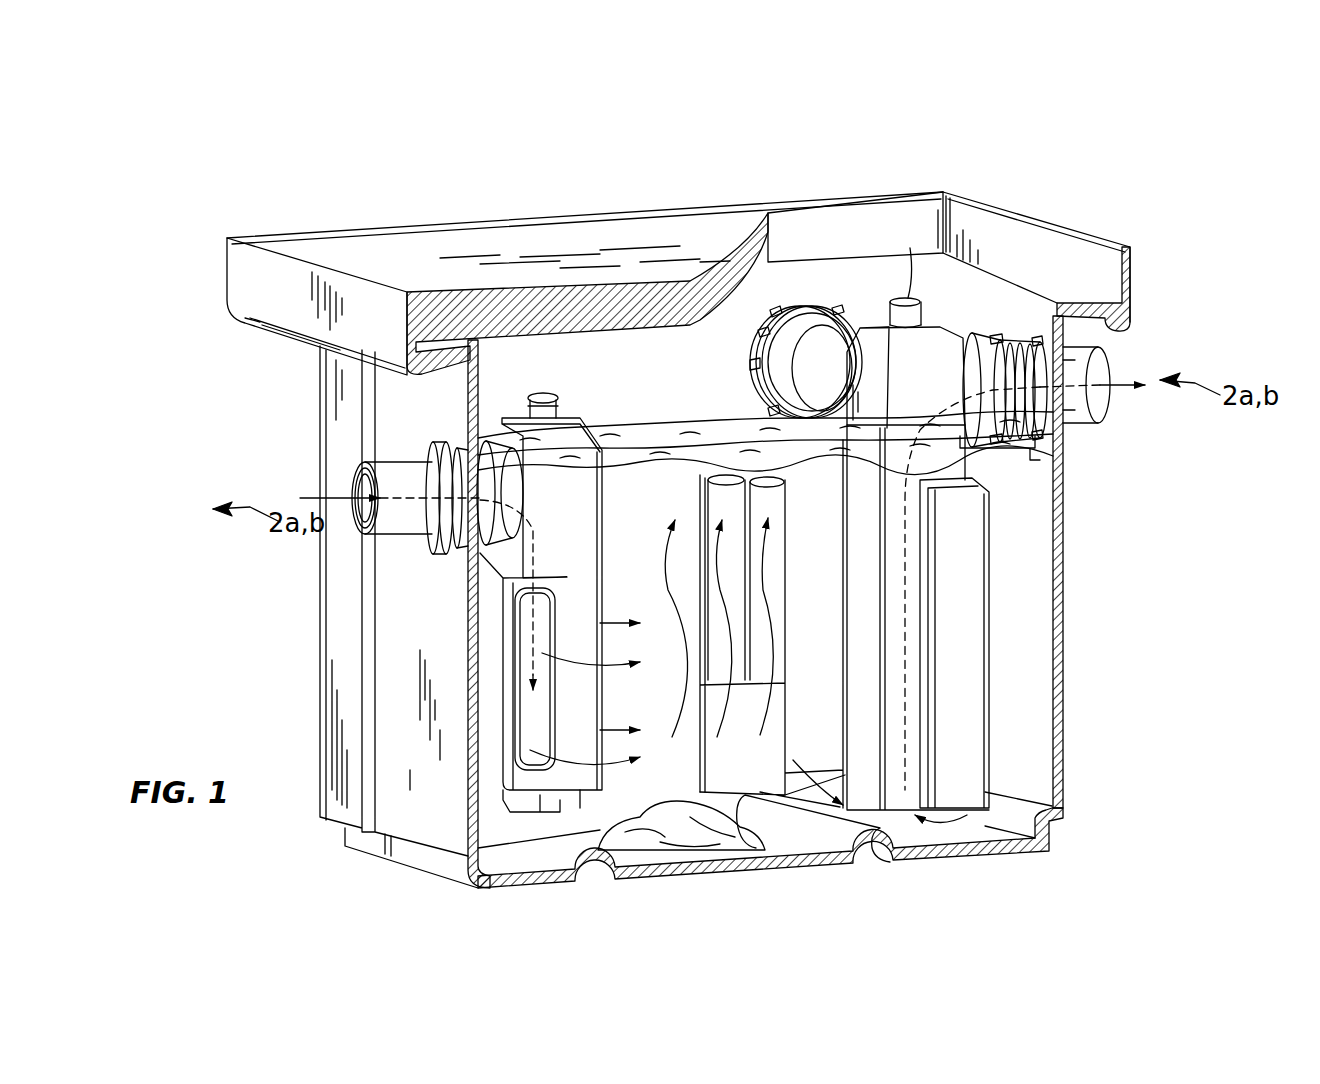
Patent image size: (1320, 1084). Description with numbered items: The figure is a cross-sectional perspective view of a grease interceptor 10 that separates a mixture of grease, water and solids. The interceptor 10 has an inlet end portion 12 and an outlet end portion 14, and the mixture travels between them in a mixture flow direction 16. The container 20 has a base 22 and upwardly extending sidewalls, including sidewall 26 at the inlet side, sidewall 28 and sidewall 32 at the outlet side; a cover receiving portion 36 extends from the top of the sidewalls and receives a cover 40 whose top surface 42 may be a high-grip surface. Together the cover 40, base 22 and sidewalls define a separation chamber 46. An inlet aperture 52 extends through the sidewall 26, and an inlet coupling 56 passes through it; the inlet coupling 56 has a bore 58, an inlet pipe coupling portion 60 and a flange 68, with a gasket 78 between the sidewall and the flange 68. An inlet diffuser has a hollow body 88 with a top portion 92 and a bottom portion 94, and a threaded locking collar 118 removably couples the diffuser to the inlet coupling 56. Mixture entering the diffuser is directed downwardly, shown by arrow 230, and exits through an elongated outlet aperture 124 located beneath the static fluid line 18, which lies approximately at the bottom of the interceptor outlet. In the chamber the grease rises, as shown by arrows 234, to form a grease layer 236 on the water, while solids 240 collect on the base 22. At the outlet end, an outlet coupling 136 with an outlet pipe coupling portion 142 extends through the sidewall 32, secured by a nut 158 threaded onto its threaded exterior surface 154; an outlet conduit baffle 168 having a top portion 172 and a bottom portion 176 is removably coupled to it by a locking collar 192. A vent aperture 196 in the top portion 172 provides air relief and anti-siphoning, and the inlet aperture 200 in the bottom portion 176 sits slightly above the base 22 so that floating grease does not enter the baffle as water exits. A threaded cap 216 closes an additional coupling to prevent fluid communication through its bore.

The interceptor 10 is at (1042, 110).
The inlet end portion 12 is at (360, 165).
The outlet end portion 14 is at (876, 140).
The mixture flow direction 16 is at (668, 196).
The static fluid line 18 is at (1020, 447).
The container 20 is at (318, 672).
The base 22 is at (795, 845).
The sidewall 26 is at (417, 820).
The sidewall 28 is at (770, 290).
The sidewall 32 is at (1032, 683).
The cover receiving portion 36 is at (838, 255).
The cover 40 is at (312, 250).
The top surface 42 is at (395, 250).
The separation chamber 46 is at (693, 765).
The inlet aperture 52 is at (353, 527).
The inlet coupling 56 is at (373, 460).
The bore 58 is at (353, 490).
The inlet pipe coupling portion 60 is at (392, 517).
The flange 68 is at (400, 448).
The gasket 78 is at (440, 547).
The body 88 is at (600, 553).
The top portion 92 is at (558, 414).
The bottom portion 94 is at (597, 778).
The locking collar 118 is at (500, 540).
The outlet aperture 124 is at (545, 735).
The outlet coupling 136 is at (1085, 430).
The outlet pipe coupling portion 142 is at (1085, 358).
The threaded exterior surface 154 is at (985, 345).
The nut 158 is at (1032, 362).
The outlet conduit baffle 168 is at (952, 790).
The top portion 172 is at (882, 325).
The bottom portion 176 is at (963, 767).
The locking collar 192 is at (985, 380).
The vent aperture 196 is at (908, 245).
The inlet aperture 200 is at (900, 810).
The threaded cap 216 is at (762, 382).
The arrow 230 is at (537, 553).
The arrows 234 is at (760, 590).
The grease layer 236 is at (815, 465).
The solids 240 is at (640, 842).